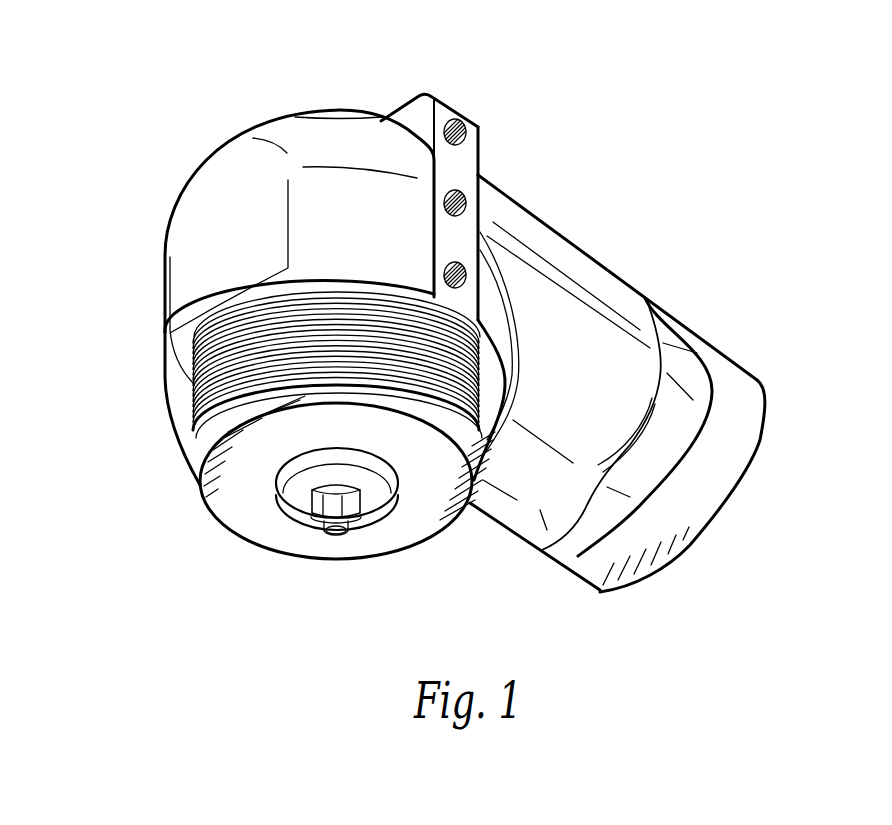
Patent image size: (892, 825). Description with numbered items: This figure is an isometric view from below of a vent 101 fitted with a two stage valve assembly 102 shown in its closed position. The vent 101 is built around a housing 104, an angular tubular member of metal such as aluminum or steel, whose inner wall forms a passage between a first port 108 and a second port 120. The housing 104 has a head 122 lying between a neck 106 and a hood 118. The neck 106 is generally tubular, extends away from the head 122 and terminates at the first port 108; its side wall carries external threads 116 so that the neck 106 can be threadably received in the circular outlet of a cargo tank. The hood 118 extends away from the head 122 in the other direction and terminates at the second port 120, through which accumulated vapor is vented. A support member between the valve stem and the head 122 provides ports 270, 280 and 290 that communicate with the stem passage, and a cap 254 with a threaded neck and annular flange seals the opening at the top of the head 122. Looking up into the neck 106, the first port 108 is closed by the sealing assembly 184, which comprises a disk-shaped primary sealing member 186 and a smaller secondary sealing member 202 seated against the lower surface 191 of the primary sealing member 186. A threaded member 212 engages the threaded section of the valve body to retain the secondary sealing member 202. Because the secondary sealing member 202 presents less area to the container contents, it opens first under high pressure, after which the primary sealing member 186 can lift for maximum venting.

The vent 101 is at (232, 84).
The valve assembly 102 is at (162, 504).
The housing 104 is at (481, 179).
The neck 106 is at (192, 382).
The first port 108 is at (193, 445).
The external threads 116 is at (478, 397).
The hood 118 is at (620, 293).
The second port 120 is at (757, 450).
The head 122 is at (215, 197).
The sealing assembly 184 is at (450, 553).
The primary sealing member 186 is at (223, 513).
The lower surface 191 is at (333, 556).
The secondary sealing member 202 is at (290, 507).
The threaded member 212 is at (353, 505).
The cap 254 is at (342, 113).
The port 270 is at (459, 125).
The port 280 is at (467, 203).
The port 290 is at (467, 278).